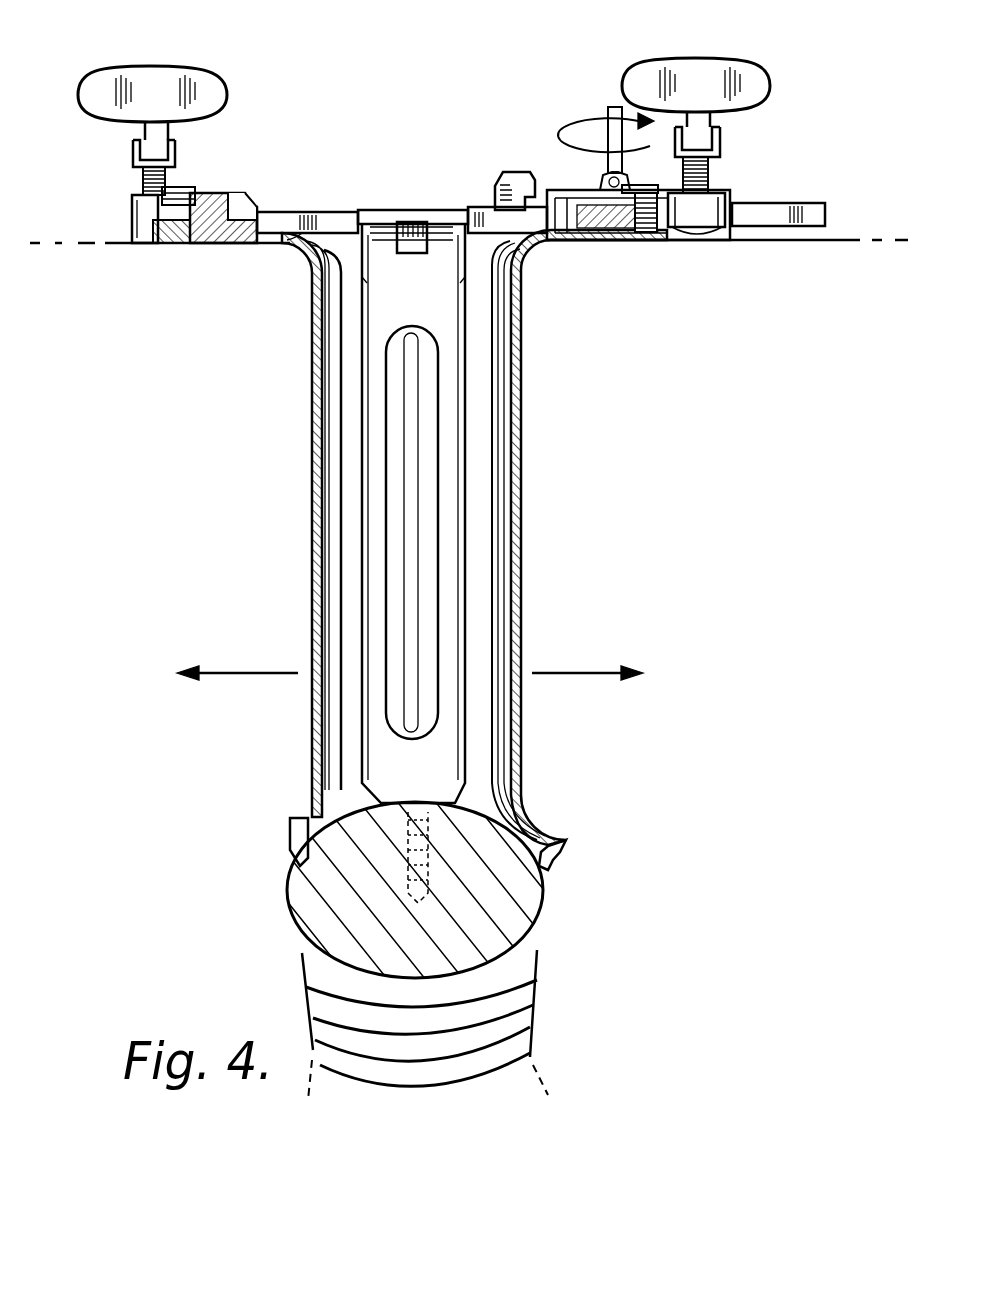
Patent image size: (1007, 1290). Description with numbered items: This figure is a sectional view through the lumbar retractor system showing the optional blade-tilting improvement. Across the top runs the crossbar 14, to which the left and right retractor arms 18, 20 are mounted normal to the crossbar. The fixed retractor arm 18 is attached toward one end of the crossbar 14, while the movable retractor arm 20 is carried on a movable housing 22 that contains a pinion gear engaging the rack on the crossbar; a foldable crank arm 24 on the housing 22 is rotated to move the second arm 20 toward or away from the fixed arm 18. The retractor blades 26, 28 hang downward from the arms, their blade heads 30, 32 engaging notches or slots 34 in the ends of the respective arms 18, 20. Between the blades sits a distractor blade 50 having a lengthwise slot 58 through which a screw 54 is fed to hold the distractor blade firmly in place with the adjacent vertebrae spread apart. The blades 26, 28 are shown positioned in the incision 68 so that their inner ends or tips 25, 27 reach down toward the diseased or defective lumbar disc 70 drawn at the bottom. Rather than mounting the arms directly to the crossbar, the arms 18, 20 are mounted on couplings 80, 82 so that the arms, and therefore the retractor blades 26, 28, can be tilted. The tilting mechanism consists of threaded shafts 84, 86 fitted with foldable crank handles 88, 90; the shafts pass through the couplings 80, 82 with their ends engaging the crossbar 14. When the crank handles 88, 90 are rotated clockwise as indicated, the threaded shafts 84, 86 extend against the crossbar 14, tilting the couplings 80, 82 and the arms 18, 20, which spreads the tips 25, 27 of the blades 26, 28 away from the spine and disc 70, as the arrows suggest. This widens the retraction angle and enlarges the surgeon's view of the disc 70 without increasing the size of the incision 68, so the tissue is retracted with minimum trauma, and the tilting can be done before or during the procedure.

The crossbar 14 is at (292, 213).
The fixed retractor arm 18 is at (223, 205).
The movable retractor arm 20 is at (592, 243).
The movable housing 22 is at (565, 190).
The foldable crank arm 24 is at (612, 107).
The inner end of retractor blade 25 is at (305, 815).
The retractor blade 26 is at (307, 318).
The inner end of retractor blade 27 is at (535, 815).
The retractor blade 28 is at (523, 400).
The blade head 30 is at (186, 193).
The blade head 32 is at (712, 175).
The notch or slot 34 is at (176, 245).
The distractor blade 50 is at (475, 330).
The screw 54 is at (410, 480).
The lengthwise slot 58 is at (405, 220).
The incision 68 is at (288, 255).
The lumbar disc 70 is at (527, 897).
The coupling 80 is at (140, 212).
The coupling 82 is at (692, 245).
The threaded shaft 84 is at (143, 180).
The threaded shaft 86 is at (702, 178).
The foldable crank handle 88 is at (168, 66).
The foldable crank handle 90 is at (712, 60).